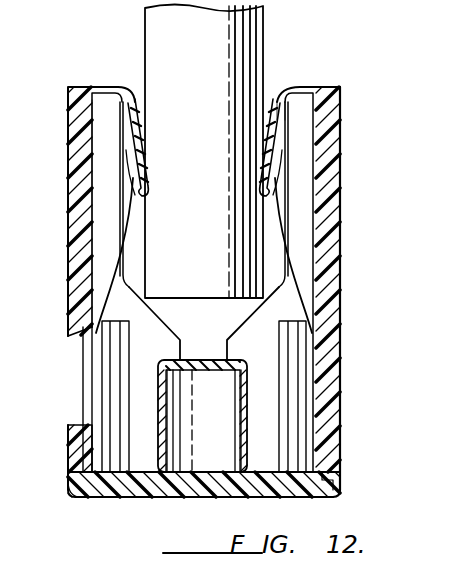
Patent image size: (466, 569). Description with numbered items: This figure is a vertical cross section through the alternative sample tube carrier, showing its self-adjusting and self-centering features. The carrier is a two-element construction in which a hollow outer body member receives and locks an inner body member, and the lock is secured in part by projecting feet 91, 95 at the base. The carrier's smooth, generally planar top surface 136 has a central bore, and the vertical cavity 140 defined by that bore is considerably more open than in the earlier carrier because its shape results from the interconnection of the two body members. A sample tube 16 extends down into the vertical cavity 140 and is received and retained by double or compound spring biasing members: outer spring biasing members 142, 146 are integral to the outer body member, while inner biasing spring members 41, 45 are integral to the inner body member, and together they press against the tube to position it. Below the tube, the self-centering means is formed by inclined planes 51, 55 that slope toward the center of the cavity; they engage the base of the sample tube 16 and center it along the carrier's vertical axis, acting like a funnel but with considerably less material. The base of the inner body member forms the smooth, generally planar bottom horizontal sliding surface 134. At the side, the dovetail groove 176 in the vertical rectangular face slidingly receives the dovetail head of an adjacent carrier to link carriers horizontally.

The sample tube 16 is at (258, 45).
The top surface 136 is at (72, 87).
The vertical cavity 140 is at (98, 147).
The outer spring biasing member 142 is at (132, 137).
The outer spring biasing member 146 is at (280, 119).
The inner biasing spring member 41 is at (132, 226).
The inner biasing spring member 45 is at (276, 231).
The inclined plane 51 is at (164, 309).
The inclined plane 55 is at (242, 318).
The dovetail groove 176 is at (92, 426).
The projecting foot 91 is at (80, 487).
The bottom horizontal sliding surface 134 is at (132, 502).
The projecting foot 95 is at (333, 489).